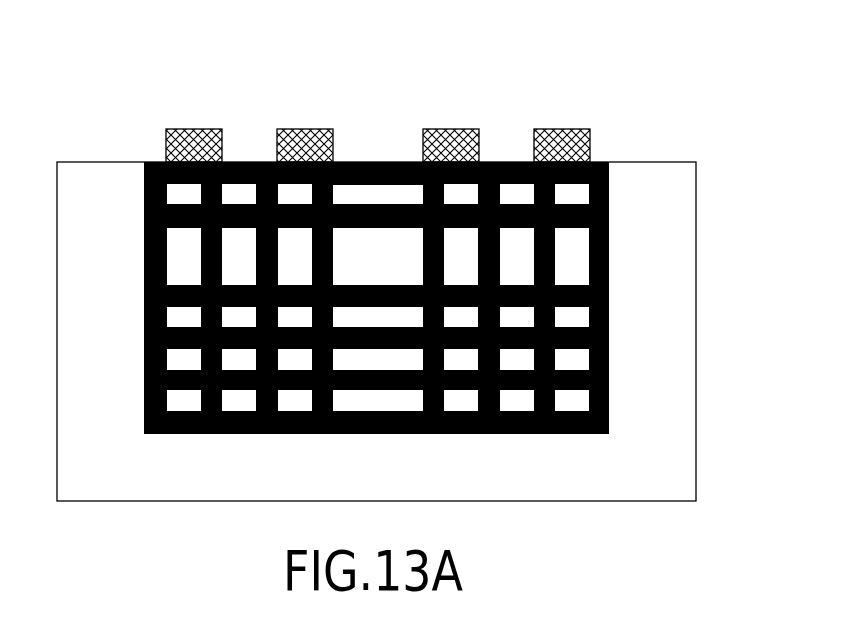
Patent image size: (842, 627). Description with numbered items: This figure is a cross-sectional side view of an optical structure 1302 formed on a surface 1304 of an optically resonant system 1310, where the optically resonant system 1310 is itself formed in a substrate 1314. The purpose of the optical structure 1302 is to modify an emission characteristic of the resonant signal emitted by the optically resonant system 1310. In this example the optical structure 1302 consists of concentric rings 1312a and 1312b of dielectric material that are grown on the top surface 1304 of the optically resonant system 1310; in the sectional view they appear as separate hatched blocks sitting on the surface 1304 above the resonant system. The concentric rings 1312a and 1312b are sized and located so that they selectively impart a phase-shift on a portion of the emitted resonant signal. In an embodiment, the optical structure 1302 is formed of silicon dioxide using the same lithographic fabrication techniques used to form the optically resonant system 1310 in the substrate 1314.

The optical structure 1302 is at (378, 81).
The surface 1304 is at (603, 161).
The optically resonant system 1310 is at (467, 268).
The concentric ring 1312a is at (378, 114).
The concentric ring 1312b is at (205, 129).
The substrate 1314 is at (672, 348).